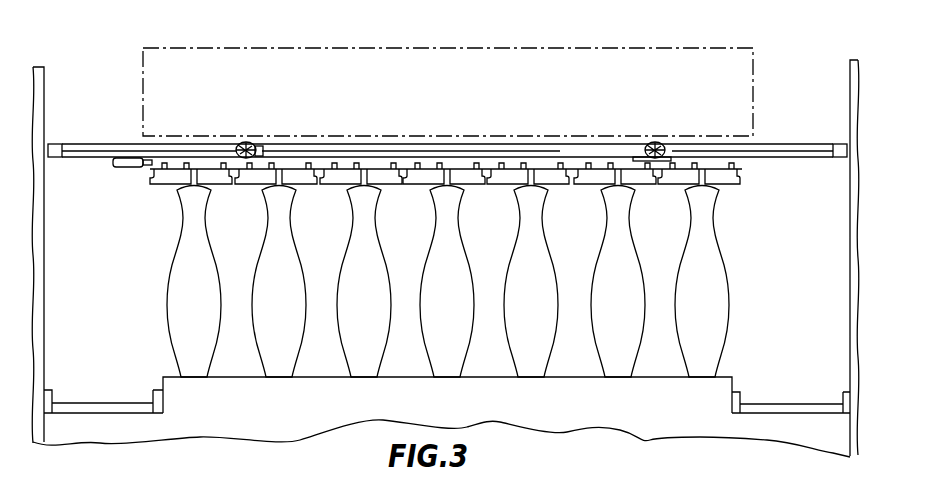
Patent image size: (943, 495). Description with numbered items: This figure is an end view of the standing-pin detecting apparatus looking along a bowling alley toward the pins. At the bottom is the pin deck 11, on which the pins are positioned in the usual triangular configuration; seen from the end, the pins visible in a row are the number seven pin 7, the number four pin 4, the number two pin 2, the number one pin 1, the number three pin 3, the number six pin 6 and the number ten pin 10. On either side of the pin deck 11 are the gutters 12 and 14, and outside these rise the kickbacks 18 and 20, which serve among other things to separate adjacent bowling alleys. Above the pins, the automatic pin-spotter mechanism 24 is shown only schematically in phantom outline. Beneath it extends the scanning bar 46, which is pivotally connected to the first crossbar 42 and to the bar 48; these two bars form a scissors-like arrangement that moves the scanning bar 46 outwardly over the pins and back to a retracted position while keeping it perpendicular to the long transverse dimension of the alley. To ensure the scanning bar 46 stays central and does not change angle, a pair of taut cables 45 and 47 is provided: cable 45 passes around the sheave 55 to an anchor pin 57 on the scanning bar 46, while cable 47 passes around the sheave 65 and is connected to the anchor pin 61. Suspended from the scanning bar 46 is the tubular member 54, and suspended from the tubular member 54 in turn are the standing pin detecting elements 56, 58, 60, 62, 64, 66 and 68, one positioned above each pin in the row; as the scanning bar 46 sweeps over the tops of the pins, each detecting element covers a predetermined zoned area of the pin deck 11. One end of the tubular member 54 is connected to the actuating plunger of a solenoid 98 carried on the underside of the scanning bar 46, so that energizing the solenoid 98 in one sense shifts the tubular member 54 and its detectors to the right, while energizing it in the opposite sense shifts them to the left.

The bowling pin 1 is at (437, 240).
The bowling pin 2 is at (358, 240).
The bowling pin 3 is at (545, 234).
The bowling pin 4 is at (271, 240).
The bowling pin 6 is at (630, 234).
The bowling pin 7 is at (185, 240).
The bowling pin 10 is at (716, 238).
The pin deck 11 is at (404, 378).
The gutter 12 is at (90, 403).
The gutter 14 is at (801, 405).
The kickback 18 is at (44, 270).
The kickback 20 is at (850, 276).
The pin-spotter mechanism 24 is at (482, 47).
The first crossbar 42 is at (638, 146).
The taut cable 45 is at (779, 152).
The scanning bar 46 is at (103, 143).
The taut cable 47 is at (152, 156).
The bar 48 is at (255, 142).
The tubular member 54 is at (481, 163).
The sheave 55 is at (667, 147).
The standing pin detecting element 56 is at (172, 186).
The anchor pin 57 is at (838, 160).
The standing pin detecting element 58 is at (259, 186).
The standing pin detecting element 60 is at (346, 186).
The anchor pin 61 is at (58, 157).
The standing pin detecting element 62 is at (431, 186).
The standing pin detecting element 64 is at (515, 186).
The sheave 65 is at (245, 143).
The standing pin detecting element 66 is at (602, 186).
The standing pin detecting element 68 is at (684, 186).
The solenoid 98 is at (130, 168).